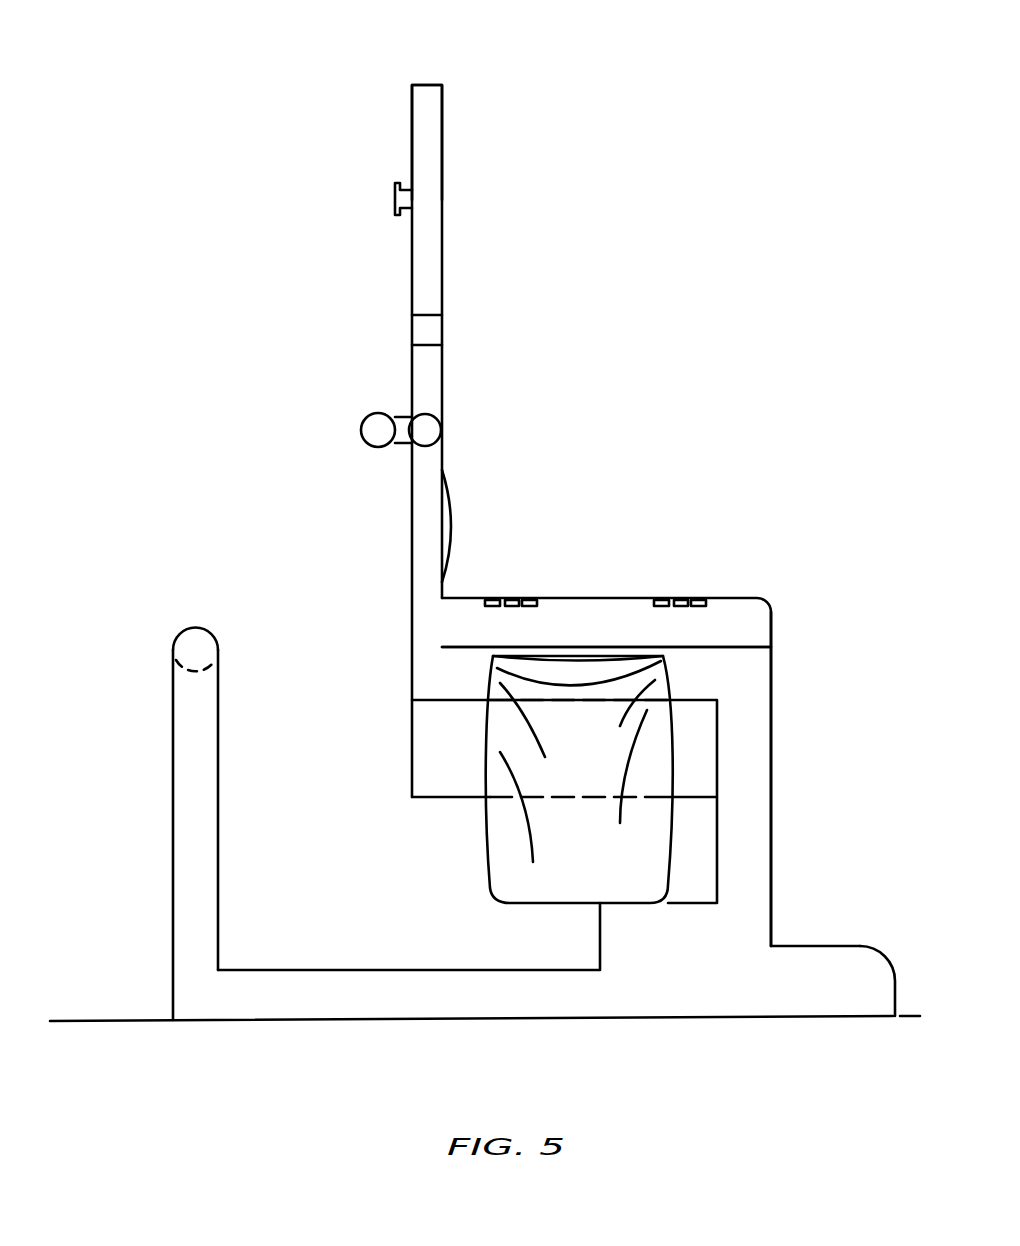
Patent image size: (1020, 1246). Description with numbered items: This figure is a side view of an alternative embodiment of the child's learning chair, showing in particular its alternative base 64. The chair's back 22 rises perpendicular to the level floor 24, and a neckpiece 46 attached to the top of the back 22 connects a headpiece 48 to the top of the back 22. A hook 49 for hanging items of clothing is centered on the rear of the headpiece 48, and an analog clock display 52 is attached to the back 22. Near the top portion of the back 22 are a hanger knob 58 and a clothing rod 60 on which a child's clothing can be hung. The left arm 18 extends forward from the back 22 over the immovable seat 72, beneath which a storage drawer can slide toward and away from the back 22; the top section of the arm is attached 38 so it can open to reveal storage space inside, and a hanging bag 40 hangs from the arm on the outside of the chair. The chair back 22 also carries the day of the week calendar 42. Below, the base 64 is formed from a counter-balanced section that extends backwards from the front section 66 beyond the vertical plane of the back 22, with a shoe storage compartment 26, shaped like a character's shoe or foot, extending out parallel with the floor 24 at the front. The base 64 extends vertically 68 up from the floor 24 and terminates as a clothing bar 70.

The left arm 18 is at (760, 598).
The back 22 is at (422, 523).
The floor 24 is at (114, 1021).
The shoe storage compartment 26 is at (895, 983).
The arm top section attachment 38 is at (683, 600).
The hanging bag 40 is at (490, 868).
The day of the week calendar 42 is at (773, 920).
The neckpiece 46 is at (425, 328).
The headpiece 48 is at (413, 122).
The hook 49 is at (395, 203).
The analog clock display 52 is at (452, 527).
The hanger knob 58 is at (425, 428).
The clothing rod 60 is at (372, 446).
The base 64 is at (352, 970).
The front section 66 is at (749, 744).
The vertical extension of base 68 is at (218, 797).
The clothing bar 70 is at (196, 626).
The immovable seat 72 is at (605, 647).